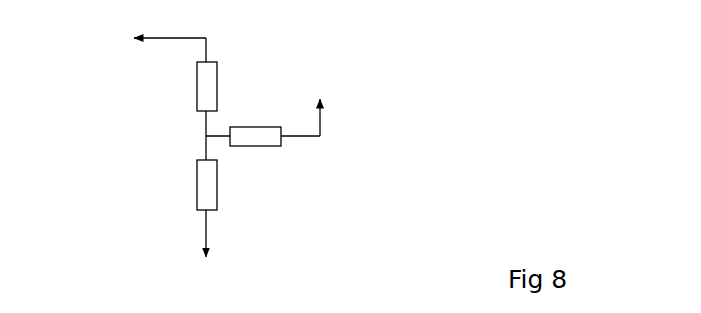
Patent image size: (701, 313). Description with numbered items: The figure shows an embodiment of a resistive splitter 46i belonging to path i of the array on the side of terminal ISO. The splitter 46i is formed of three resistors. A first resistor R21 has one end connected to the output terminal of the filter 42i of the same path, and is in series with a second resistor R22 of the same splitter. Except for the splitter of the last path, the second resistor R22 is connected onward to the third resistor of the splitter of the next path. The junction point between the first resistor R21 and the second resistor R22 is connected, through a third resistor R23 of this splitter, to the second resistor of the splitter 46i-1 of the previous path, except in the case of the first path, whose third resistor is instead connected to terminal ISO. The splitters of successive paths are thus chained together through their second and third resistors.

The filter 42i is at (152, 39).
The splitter 46i is at (186, 124).
The splitter of the previous path 46i-1 is at (316, 106).
The first resistor R21 is at (188, 86).
The second resistor R22 is at (187, 185).
The third resistor R23 is at (255, 122).